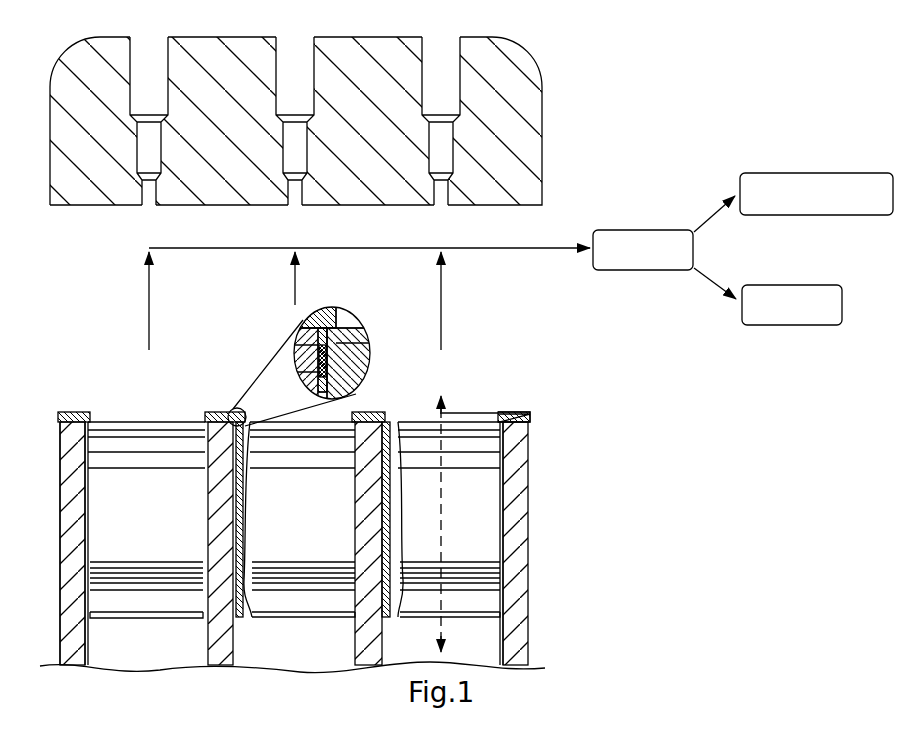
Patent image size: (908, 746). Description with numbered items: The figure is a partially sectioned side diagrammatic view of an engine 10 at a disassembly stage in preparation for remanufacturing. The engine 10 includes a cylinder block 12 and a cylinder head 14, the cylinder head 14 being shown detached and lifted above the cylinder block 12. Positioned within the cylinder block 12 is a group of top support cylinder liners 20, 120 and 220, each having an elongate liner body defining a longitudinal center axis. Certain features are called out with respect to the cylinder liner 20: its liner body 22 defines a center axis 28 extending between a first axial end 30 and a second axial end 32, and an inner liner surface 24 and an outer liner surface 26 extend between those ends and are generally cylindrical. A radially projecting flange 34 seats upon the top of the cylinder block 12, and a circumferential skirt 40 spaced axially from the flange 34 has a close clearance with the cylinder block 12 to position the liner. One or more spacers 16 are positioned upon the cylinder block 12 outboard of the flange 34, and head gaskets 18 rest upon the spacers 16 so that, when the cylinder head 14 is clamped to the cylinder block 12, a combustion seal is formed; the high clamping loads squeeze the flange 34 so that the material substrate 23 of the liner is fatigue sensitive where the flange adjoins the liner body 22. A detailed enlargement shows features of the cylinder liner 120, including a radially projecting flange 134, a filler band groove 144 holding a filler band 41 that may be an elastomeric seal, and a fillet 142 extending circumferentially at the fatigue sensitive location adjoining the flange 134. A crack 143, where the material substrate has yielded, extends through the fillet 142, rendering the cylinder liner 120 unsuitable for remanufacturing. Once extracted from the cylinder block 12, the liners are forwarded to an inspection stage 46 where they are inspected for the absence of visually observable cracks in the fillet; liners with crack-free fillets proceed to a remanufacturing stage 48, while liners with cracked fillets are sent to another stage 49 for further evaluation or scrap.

The engine 10 is at (565, 97).
The cylinder head 14 is at (540, 80).
The inspection stage 46 is at (640, 230).
The remanufacturing stage 48 is at (812, 173).
The stage 49 is at (788, 285).
The cylinder block 12 is at (528, 470).
The cylinder liner 220 is at (95, 520).
The head gasket 18 is at (517, 412).
The cylinder liner 20 is at (495, 525).
The spacer 16 is at (528, 420).
The radially projecting flange 34 is at (497, 420).
The first axial end 30 is at (490, 411).
The outer liner surface 26 is at (379, 501).
The cylinder liner 120 is at (300, 605).
The material substrate 23 is at (399, 422).
The inner liner surface 24 is at (396, 480).
The circumferential skirt 40 is at (495, 432).
The liner body 22 is at (450, 576).
The center axis 28 is at (441, 505).
The second axial end 32 is at (490, 626).
The radially projecting flange 134 is at (345, 318).
The fillet 142 is at (312, 352).
The crack 143 is at (350, 348).
The filler band 41 is at (318, 366).
The filler band groove 144 is at (340, 384).